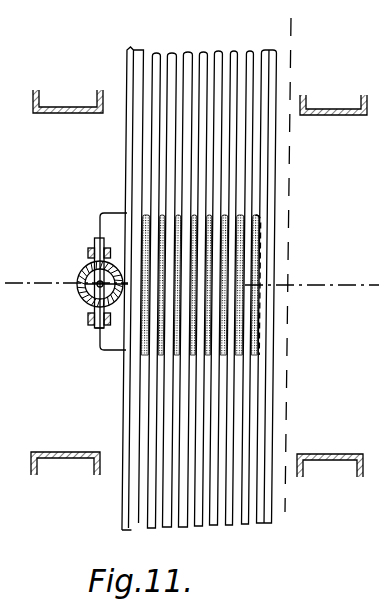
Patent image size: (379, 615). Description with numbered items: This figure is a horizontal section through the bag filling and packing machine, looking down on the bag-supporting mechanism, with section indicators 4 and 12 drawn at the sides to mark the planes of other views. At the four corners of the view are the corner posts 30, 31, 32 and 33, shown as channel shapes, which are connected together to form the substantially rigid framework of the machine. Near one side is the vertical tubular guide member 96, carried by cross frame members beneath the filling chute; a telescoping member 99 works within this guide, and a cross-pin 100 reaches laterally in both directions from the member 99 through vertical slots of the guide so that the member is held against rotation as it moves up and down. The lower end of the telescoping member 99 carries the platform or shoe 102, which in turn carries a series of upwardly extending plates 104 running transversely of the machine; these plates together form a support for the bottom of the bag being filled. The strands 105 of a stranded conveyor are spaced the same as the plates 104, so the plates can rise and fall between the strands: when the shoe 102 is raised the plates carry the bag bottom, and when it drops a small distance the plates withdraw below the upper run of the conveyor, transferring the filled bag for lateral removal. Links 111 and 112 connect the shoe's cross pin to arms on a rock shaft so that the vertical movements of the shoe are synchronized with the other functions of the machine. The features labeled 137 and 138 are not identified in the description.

The section line 4- 4 is at (33, 257).
The section line 12- 12 is at (265, 40).
The corner post 30 is at (325, 460).
The corner post 31 is at (328, 110).
The corner post 32 is at (64, 108).
The corner post 33 is at (60, 458).
The vertical tubular guide member 96 is at (77, 278).
The telescoping member 99 is at (90, 287).
The cross-pin 100 is at (88, 308).
The platform or shoe 102 is at (112, 226).
The upwardly extending plates 104 is at (228, 337).
The strands 105 is at (233, 190).
The link 111 is at (93, 328).
The link 112 is at (92, 250).
The inner tube assembly 137 is at (271, 227).
The tube bank 138 is at (129, 143).